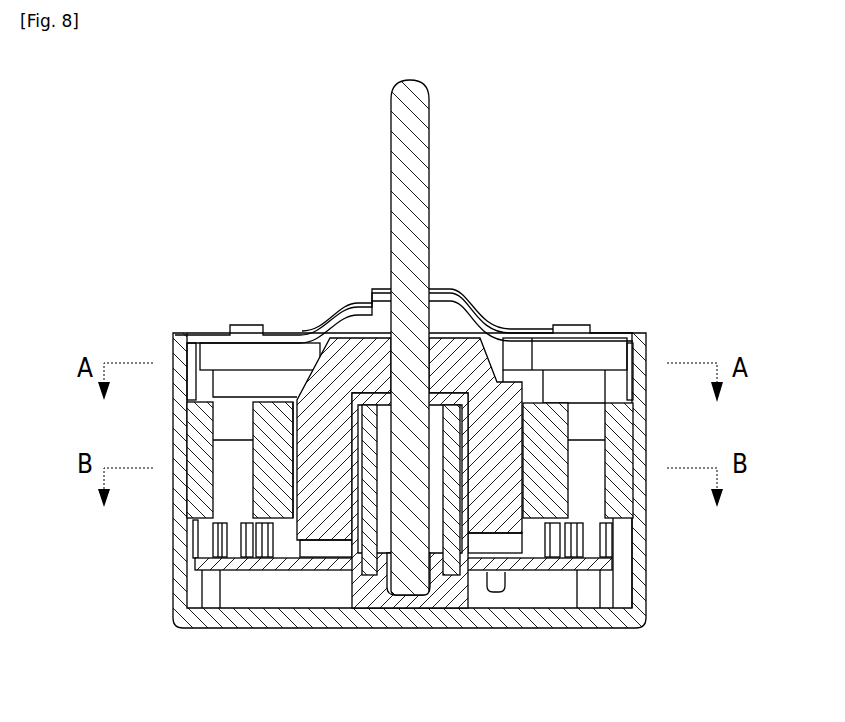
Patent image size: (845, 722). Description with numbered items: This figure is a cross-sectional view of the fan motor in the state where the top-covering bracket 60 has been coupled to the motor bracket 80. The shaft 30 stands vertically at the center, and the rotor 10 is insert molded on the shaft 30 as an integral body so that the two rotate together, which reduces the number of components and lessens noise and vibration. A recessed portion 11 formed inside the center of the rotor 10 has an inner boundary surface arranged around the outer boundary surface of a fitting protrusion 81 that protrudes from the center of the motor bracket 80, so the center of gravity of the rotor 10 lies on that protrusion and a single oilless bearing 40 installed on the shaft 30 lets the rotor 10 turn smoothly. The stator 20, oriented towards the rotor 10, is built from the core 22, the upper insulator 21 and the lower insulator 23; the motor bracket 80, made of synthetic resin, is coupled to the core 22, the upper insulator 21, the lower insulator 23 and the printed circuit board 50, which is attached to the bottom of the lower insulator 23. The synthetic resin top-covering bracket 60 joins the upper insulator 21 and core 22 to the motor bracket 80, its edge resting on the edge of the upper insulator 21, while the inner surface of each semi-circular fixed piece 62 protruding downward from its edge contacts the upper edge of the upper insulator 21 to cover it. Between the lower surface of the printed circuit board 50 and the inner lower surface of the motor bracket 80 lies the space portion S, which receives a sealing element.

The rotor 10 is at (313, 493).
The recessed portion 11 is at (370, 382).
The stator 20 is at (205, 482).
The upper insulator 21 is at (600, 368).
The core 22 is at (646, 432).
The lower insulator 23 is at (593, 480).
The shaft 30 is at (420, 127).
The oilless bearing 40 is at (465, 560).
The printed circuit board 50 is at (535, 560).
The top-covering bracket 60 is at (477, 300).
The semi-circular fixed piece 62 is at (173, 352).
The motor bracket 80 is at (643, 585).
The fitting protrusion 81 is at (333, 552).
The space portion S is at (255, 593).